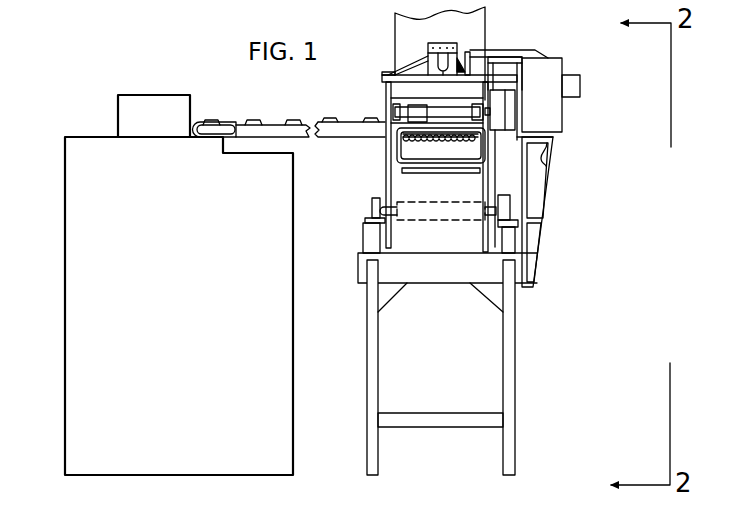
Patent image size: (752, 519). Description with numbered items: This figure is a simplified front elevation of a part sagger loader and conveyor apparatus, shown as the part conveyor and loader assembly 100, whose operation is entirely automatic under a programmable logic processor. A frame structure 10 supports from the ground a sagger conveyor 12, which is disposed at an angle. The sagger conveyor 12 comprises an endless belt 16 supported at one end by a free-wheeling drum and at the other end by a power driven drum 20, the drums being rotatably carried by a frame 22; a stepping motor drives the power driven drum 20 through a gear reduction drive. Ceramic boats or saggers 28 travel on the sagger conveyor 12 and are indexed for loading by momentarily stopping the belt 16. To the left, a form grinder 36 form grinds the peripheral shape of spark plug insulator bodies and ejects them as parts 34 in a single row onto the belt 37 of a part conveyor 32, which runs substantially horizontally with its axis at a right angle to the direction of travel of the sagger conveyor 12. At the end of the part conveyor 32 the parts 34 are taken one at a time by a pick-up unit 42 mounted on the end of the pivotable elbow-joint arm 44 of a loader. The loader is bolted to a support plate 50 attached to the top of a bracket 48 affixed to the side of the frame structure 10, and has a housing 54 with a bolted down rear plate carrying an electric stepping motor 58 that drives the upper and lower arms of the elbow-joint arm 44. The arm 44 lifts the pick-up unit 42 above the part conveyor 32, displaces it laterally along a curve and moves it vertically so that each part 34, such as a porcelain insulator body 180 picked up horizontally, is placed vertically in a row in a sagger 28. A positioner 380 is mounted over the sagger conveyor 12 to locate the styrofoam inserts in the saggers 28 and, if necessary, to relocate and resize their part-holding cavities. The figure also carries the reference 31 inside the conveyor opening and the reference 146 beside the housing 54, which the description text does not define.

The frame structure 10 is at (520, 329).
The sagger conveyor 12 is at (371, 189).
The endless belt 16 is at (411, 212).
The power driven drum 20 is at (457, 212).
The frame 22 is at (381, 167).
The sagger 28 is at (394, 149).
The teeth 31 is at (430, 137).
The part conveyor 32 is at (277, 121).
The parts 34 is at (212, 118).
The form grinder 36 is at (62, 349).
The belt 37 is at (229, 122).
The pick-up unit 42 is at (455, 101).
The elbow-joint arm 44 is at (508, 104).
The bracket 48 is at (538, 205).
The support plate 50 is at (544, 164).
The housing 54 is at (554, 70).
The electric stepping motor 58 is at (581, 84).
The part conveyor and loader assembly 100 is at (550, 252).
The bracket 146 is at (563, 126).
The insulator body 180 is at (257, 119).
The positioner 380 is at (442, 40).